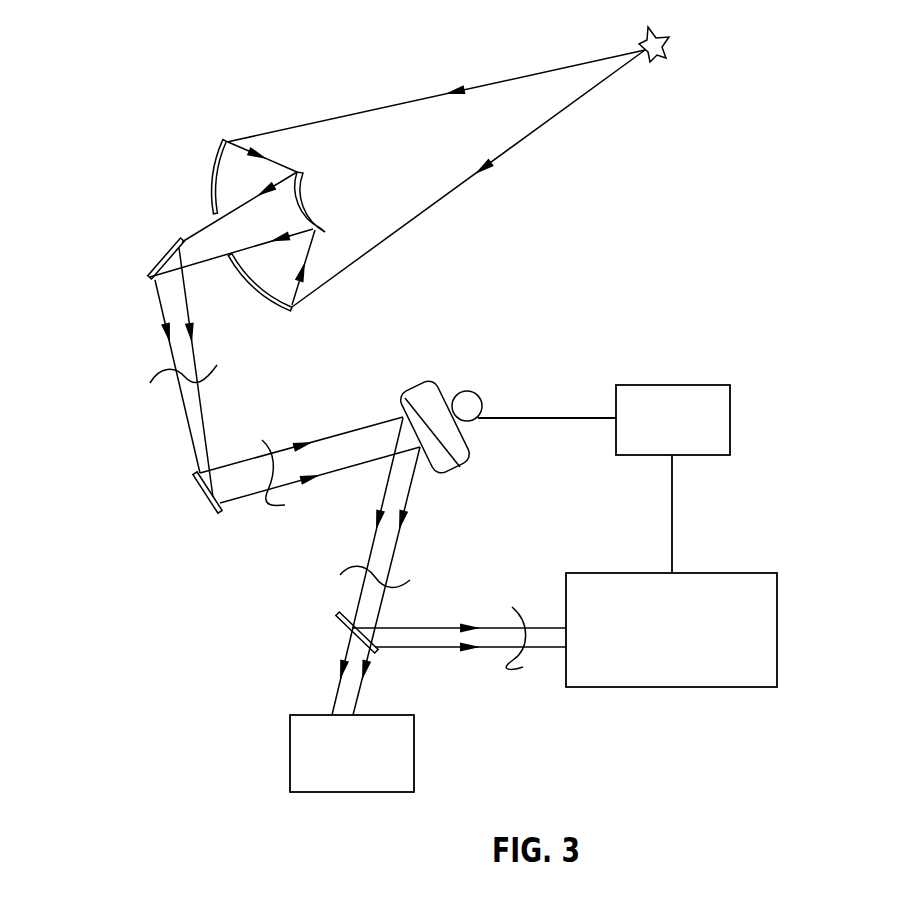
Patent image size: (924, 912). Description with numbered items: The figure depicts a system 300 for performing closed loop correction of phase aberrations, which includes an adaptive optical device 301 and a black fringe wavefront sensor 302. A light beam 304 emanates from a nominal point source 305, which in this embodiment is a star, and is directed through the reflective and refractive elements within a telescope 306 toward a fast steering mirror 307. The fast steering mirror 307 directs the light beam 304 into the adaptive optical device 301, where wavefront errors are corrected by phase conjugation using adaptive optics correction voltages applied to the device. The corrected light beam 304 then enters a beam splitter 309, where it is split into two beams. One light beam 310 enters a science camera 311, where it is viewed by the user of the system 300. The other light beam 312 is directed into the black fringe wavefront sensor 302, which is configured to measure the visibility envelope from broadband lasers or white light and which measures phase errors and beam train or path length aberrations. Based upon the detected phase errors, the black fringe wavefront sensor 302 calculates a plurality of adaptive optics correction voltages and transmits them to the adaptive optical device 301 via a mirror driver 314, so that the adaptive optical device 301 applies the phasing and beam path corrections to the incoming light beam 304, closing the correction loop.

The system 300 is at (823, 163).
The adaptive optical device 301 is at (448, 380).
The black fringe wavefront sensor 302 is at (715, 573).
The incoming light beam 304 is at (565, 108).
The nominal point source 305 is at (669, 43).
The telescope 306 is at (207, 167).
The fast steering mirror 307 is at (195, 477).
The beam splitter 309 is at (337, 621).
The light beam 310 is at (337, 697).
The science camera 311 is at (392, 715).
The light beam 312 is at (445, 626).
The mirror driver 314 is at (697, 385).